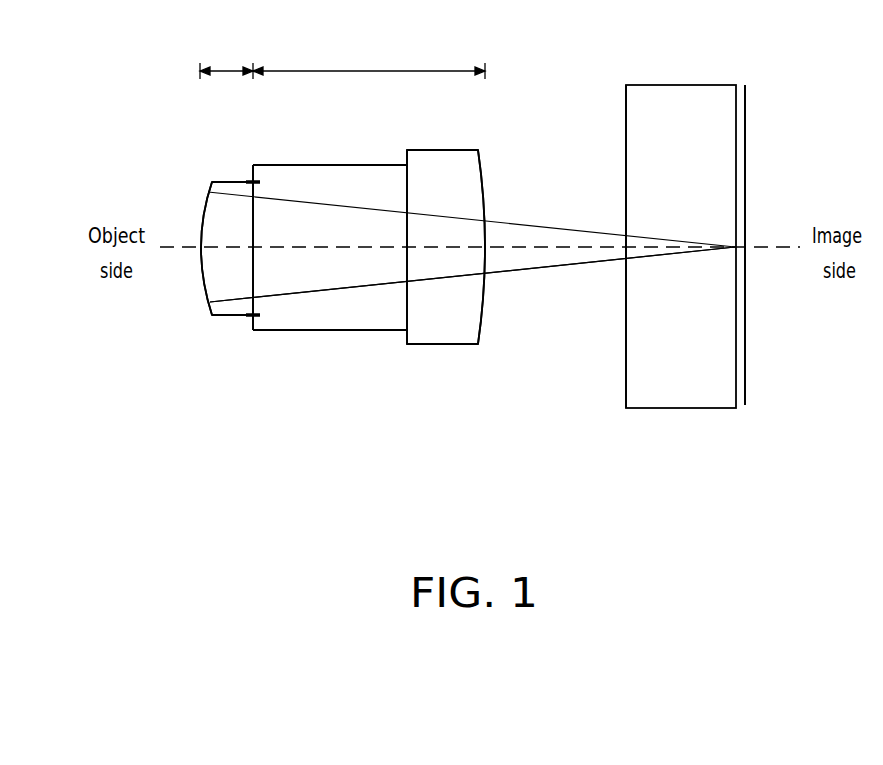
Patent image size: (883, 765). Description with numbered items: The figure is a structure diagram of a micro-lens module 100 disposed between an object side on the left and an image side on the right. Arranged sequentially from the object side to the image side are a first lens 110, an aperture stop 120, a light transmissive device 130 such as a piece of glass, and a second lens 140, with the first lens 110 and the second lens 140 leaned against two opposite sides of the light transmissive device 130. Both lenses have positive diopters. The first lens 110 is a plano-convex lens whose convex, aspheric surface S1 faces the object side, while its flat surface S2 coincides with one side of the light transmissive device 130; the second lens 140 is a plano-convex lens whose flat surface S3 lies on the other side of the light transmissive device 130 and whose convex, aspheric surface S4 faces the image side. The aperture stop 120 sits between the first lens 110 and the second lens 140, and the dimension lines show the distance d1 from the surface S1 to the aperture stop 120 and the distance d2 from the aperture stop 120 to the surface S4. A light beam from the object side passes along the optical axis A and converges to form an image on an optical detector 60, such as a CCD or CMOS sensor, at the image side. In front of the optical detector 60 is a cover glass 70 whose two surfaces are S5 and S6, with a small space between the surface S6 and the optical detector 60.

The micro-lens module 100 is at (820, 515).
The first lens 110 is at (218, 318).
The aperture stop 120 is at (260, 330).
The light transmissive device 130 is at (330, 322).
The second lens 140 is at (444, 340).
The cover glass 70 is at (682, 405).
The optical detector 60 is at (747, 403).
The optical axis A is at (540, 250).
The surface S1 is at (209, 186).
The surface S2 is at (251, 170).
The surface S3 is at (405, 175).
The surface S4 is at (481, 160).
The surface S5 is at (624, 110).
The surface S6 is at (747, 106).
The distance d1 is at (226, 61).
The distance d2 is at (369, 61).